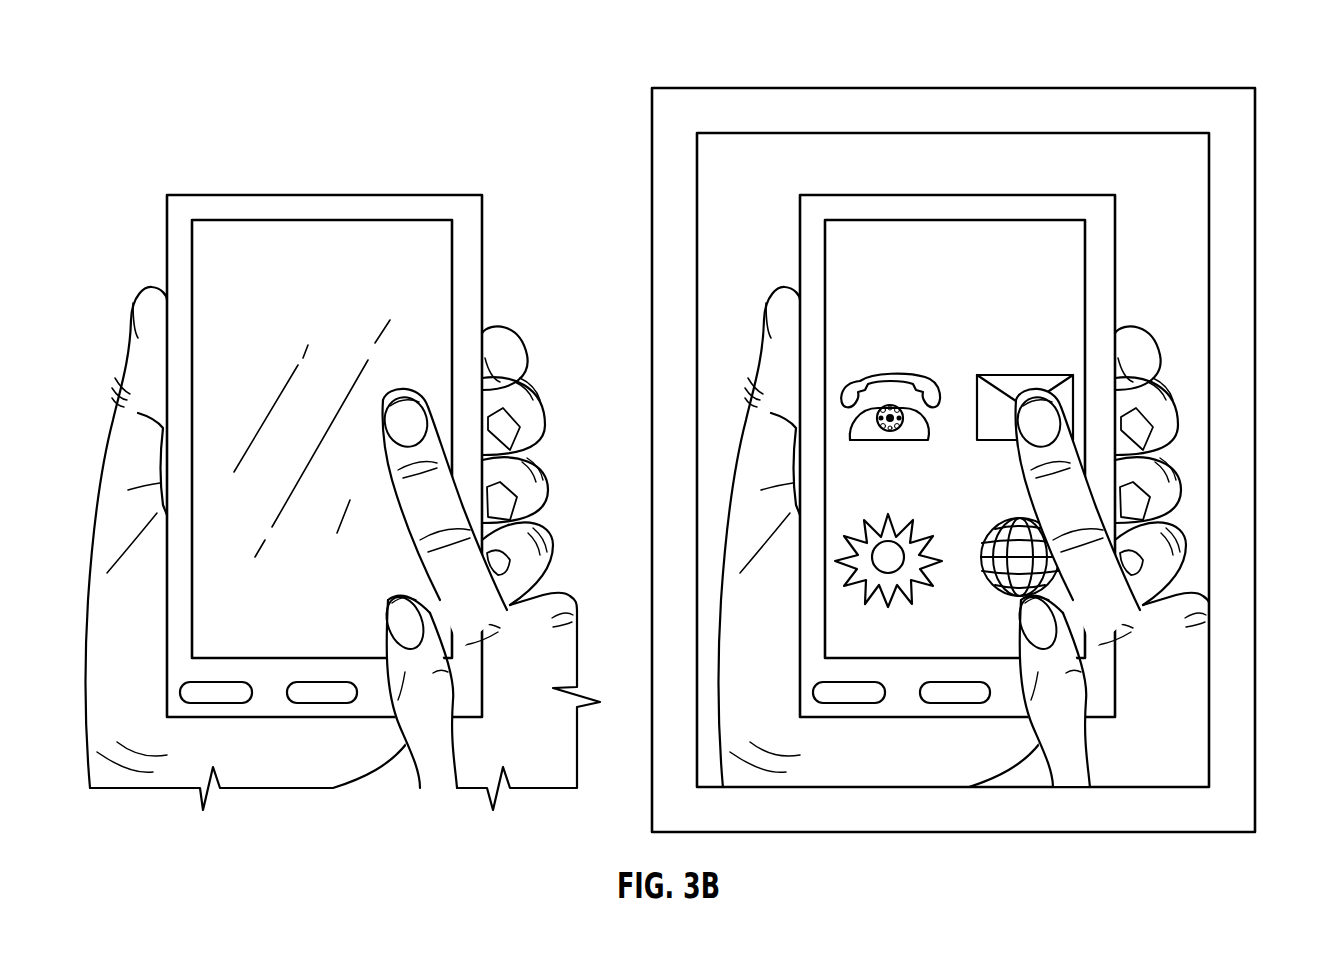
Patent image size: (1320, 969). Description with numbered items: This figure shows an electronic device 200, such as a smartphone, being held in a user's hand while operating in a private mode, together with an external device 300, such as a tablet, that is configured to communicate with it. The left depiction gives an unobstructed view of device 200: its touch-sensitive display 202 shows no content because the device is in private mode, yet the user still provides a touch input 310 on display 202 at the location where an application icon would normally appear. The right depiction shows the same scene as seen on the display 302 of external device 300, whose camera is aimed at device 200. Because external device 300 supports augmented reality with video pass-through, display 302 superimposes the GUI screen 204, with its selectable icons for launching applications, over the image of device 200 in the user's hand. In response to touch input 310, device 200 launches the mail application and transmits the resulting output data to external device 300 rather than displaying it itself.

The electronic device 200 is at (206, 124).
The display 202 is at (397, 220).
The touch input 310 is at (400, 390).
The external device 300 is at (833, 62).
The display 302 is at (1023, 132).
The GUI screen 204 is at (955, 439).